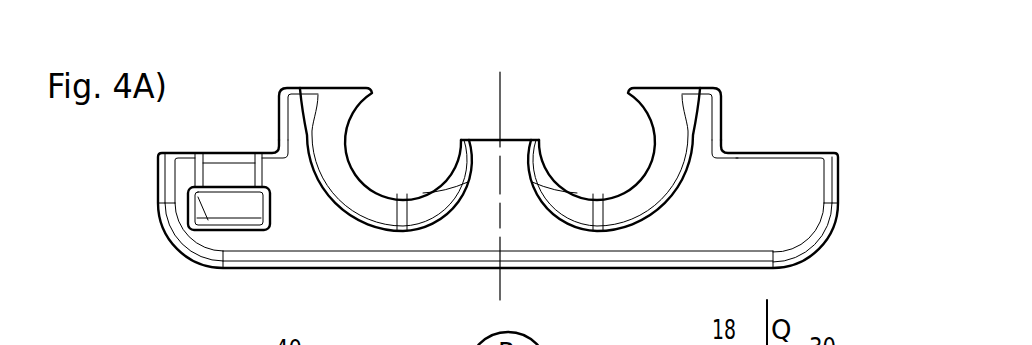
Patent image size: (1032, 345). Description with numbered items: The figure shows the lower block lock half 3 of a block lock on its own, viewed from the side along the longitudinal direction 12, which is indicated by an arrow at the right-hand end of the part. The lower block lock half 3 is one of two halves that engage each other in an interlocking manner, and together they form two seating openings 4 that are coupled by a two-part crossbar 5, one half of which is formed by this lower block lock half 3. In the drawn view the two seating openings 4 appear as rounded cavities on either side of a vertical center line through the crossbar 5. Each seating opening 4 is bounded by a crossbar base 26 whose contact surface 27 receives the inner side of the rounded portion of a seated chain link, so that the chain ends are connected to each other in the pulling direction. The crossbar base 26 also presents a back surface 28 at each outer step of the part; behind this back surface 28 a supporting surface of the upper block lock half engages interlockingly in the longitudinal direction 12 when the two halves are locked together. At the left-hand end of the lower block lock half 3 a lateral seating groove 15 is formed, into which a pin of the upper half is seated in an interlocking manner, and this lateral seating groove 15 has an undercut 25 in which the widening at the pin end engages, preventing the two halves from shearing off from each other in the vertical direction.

The lower block lock half 3 is at (249, 67).
The seating opening 4 is at (410, 156).
The crossbar 5 is at (525, 139).
The longitudinal direction 12 is at (889, 190).
The lateral seating groove 15 is at (239, 210).
The undercut 25 is at (200, 200).
The crossbar base 26 is at (312, 115).
The contact surface 27 is at (362, 122).
The back surface 28 is at (268, 127).